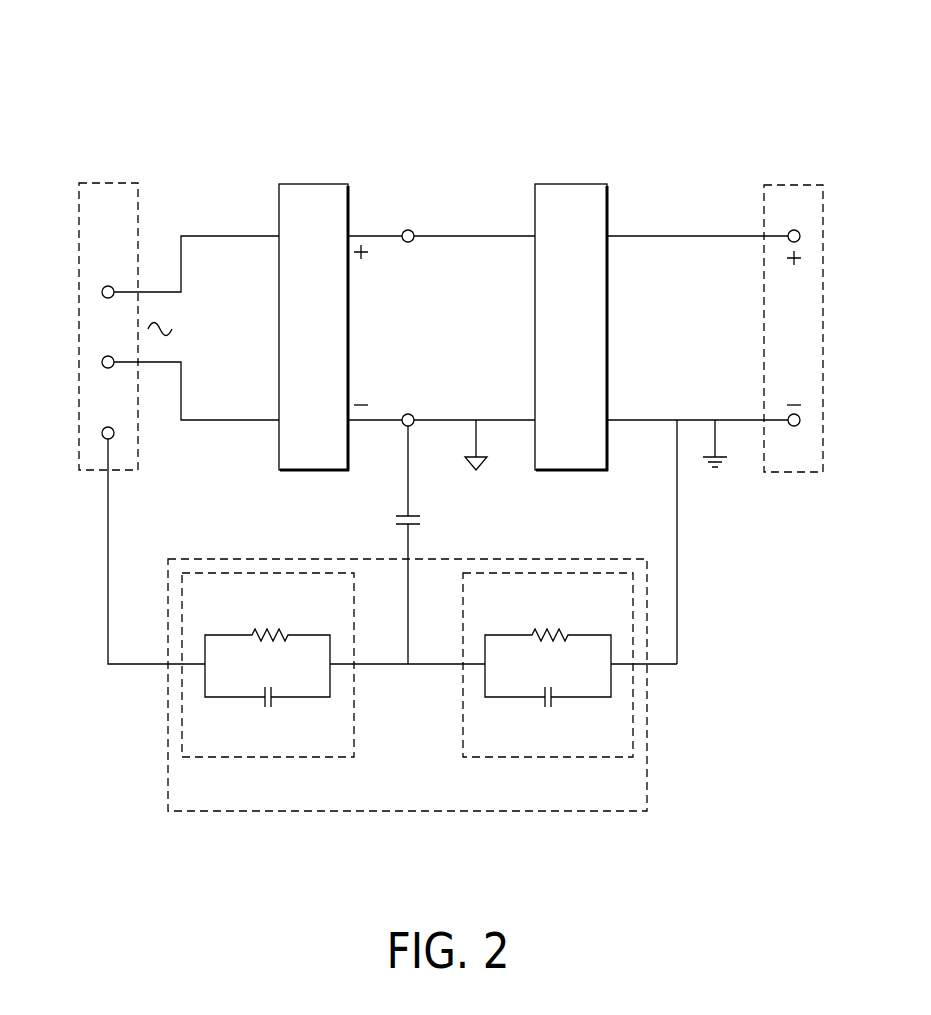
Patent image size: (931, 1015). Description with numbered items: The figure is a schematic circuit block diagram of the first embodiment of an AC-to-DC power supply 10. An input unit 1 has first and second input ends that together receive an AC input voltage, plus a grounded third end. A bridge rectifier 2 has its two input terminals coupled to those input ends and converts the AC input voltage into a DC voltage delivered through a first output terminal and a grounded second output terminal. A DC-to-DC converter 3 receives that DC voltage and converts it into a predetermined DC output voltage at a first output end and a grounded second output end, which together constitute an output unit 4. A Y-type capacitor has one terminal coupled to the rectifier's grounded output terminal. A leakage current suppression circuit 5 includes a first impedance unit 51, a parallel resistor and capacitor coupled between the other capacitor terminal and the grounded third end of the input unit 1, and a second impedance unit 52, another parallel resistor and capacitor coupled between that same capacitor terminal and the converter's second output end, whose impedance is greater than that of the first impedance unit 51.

The AC-to-DC power supply 10 is at (230, 49).
The input unit 1 is at (115, 183).
The bridge rectifier 2 is at (316, 184).
The DC-to-DC converter 3 is at (572, 184).
The output unit 4 is at (788, 185).
The leakage current suppression circuit 5 is at (427, 811).
The first impedance unit 51 is at (182, 706).
The second impedance unit 52 is at (633, 704).